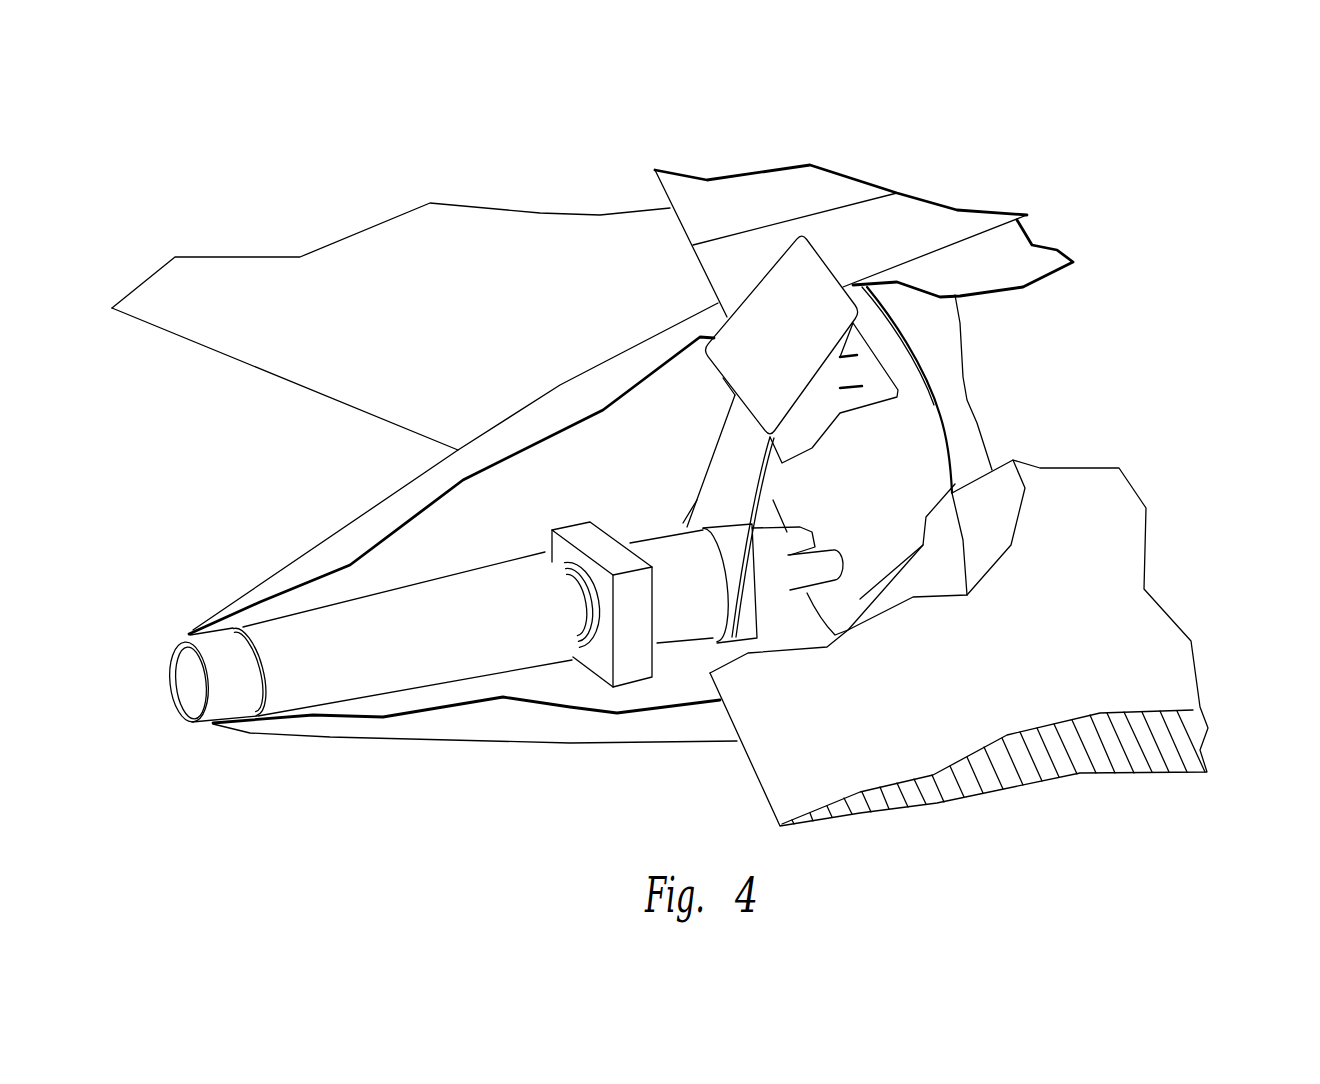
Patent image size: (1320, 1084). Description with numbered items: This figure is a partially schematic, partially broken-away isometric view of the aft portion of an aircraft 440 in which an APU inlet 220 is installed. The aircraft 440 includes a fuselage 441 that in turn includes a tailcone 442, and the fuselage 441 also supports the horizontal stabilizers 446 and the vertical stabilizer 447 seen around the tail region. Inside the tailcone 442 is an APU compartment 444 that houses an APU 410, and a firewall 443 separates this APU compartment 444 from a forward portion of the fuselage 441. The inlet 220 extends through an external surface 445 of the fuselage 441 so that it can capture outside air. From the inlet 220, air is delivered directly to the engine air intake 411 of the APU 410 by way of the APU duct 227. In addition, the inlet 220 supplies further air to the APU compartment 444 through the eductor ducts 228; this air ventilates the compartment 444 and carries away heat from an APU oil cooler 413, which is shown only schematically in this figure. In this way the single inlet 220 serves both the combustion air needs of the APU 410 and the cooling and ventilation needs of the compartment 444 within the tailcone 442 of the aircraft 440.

The aircraft 440 is at (1008, 134).
The fuselage 441 is at (940, 330).
The tailcone 442 is at (318, 558).
The firewall 443 is at (920, 423).
The APU compartment 444 is at (434, 541).
The external surface 445 is at (1013, 252).
The horizontal stabilizers 446 is at (373, 250).
The vertical stabilizer 447 is at (707, 198).
The inlet 220 is at (707, 381).
The APU duct 227 is at (725, 468).
The eductor ducts 228 is at (725, 390).
The APU 410 is at (670, 622).
The engine air intake 411 is at (812, 530).
The APU oil cooler 413 is at (562, 530).